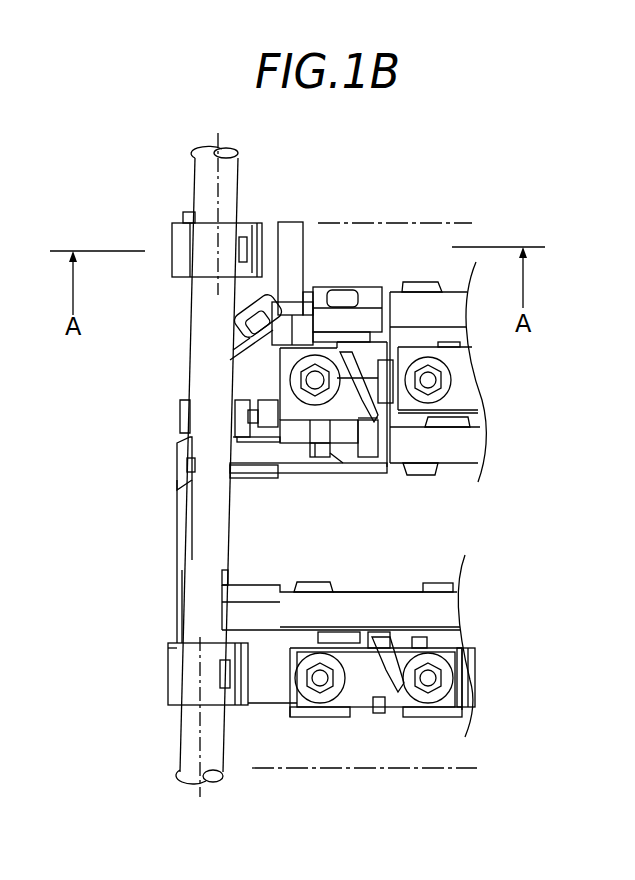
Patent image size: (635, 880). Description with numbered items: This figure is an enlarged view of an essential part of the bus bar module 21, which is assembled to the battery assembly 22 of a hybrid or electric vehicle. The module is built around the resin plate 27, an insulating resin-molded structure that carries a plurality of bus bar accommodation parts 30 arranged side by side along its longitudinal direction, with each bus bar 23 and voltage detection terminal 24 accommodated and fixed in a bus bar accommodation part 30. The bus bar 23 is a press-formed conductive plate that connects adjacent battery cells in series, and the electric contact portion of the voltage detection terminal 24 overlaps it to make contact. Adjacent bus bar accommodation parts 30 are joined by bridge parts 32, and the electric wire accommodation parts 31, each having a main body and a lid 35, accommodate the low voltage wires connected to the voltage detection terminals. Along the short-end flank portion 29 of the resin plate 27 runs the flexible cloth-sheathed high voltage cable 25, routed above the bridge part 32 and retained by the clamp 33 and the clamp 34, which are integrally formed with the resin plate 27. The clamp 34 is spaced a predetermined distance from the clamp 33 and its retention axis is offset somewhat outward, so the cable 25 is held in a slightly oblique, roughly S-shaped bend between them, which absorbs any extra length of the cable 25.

The bus bar module 21 is at (516, 212).
The battery assembly 22 is at (398, 223).
The bus bar 23 is at (357, 693).
The voltage detection terminal 24 is at (395, 697).
The high voltage cable 25 is at (207, 183).
The resin plate 27 is at (461, 470).
The short-end flank portion 29 is at (177, 515).
The bus bar accommodation part 30 is at (462, 718).
The electric wire accommodation part 31 is at (443, 610).
The bridge part 32 is at (180, 482).
The clamp 33 is at (164, 233).
The clamp 34 is at (160, 667).
The lid 35 is at (396, 600).